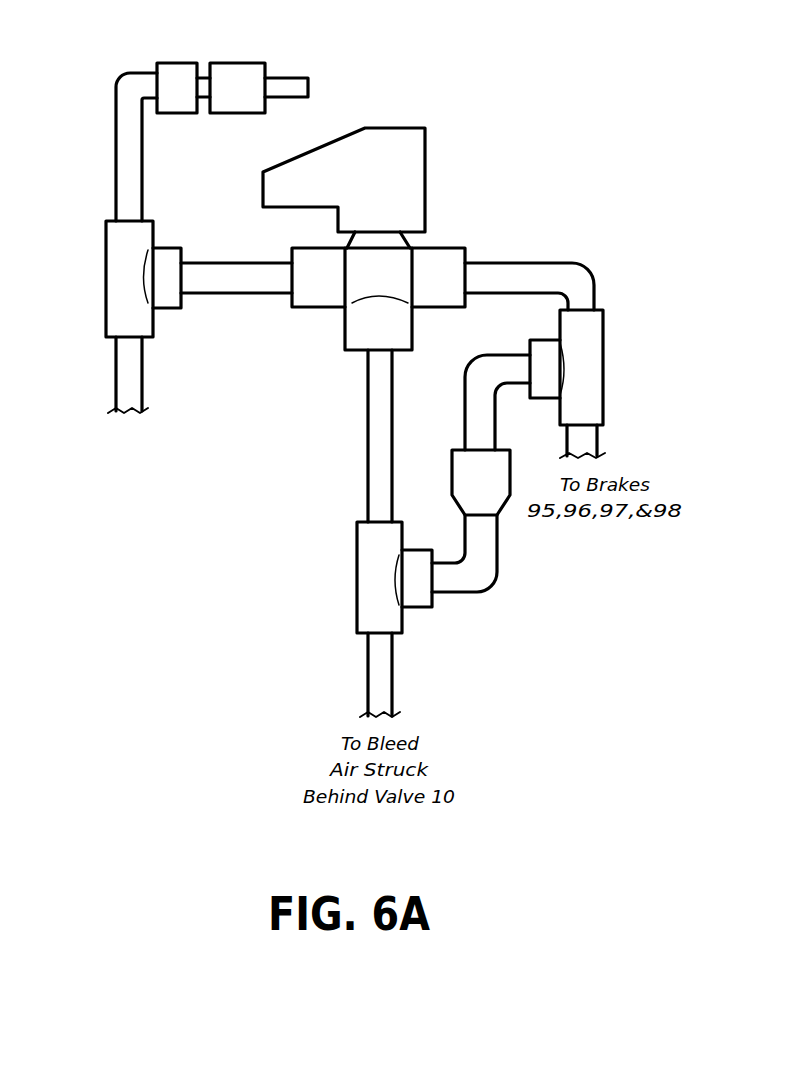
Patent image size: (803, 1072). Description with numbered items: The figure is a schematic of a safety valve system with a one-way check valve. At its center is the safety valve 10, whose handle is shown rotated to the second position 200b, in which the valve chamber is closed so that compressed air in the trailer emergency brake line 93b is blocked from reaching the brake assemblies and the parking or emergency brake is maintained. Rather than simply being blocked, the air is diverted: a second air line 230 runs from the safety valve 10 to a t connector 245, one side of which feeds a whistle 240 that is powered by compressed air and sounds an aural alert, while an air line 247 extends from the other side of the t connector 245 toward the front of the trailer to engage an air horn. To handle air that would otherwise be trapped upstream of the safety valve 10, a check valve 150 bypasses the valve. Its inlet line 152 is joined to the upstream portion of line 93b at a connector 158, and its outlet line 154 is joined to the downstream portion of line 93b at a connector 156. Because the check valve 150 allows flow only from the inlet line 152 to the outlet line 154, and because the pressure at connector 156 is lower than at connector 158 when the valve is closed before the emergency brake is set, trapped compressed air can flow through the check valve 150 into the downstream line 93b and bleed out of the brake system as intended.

The safety valve 10 is at (432, 268).
The air line 93b is at (577, 282).
The check valve 150 is at (465, 480).
The inlet line 152 is at (465, 412).
The outlet line 154 is at (455, 594).
The connector 156 is at (352, 350).
The connector 158 is at (597, 372).
The second position of handle 200b is at (387, 148).
The second air line 230 is at (113, 158).
The whistle 240 is at (232, 68).
The t connector 245 is at (105, 285).
The air line 247 is at (122, 372).